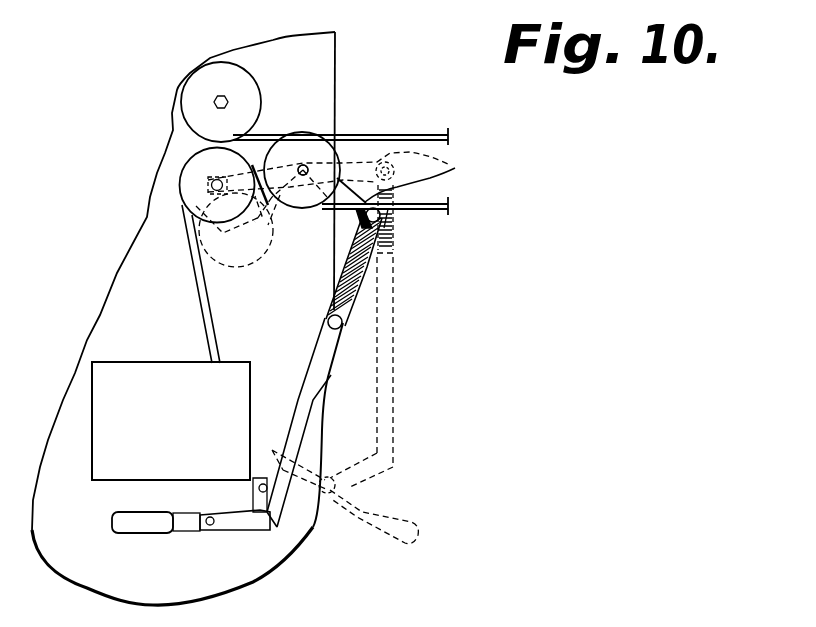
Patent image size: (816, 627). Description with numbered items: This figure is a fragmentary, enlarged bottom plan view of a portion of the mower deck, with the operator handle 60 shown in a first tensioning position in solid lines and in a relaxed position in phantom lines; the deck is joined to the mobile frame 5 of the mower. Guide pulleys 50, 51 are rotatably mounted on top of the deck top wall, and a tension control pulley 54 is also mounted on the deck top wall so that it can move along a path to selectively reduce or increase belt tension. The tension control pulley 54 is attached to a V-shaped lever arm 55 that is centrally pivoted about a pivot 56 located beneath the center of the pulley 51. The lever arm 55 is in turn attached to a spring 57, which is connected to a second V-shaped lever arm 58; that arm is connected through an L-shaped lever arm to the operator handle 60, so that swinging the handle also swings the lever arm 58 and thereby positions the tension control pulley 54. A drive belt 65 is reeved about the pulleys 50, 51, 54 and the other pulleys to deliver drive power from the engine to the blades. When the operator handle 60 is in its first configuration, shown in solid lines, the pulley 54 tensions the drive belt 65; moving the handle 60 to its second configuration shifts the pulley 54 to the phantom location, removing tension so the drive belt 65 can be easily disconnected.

The mobile frame 5 is at (337, 53).
The guide pulley 50 is at (259, 88).
The guide pulley 51 is at (305, 142).
The tension control pulley 54 is at (187, 173).
The V-shaped lever arm 55 is at (455, 168).
The pivot 56 is at (305, 168).
The spring 57 is at (397, 236).
The second V-shaped lever arm 58 is at (393, 360).
The operator handle 60 is at (140, 533).
The drive belt 65 is at (435, 206).